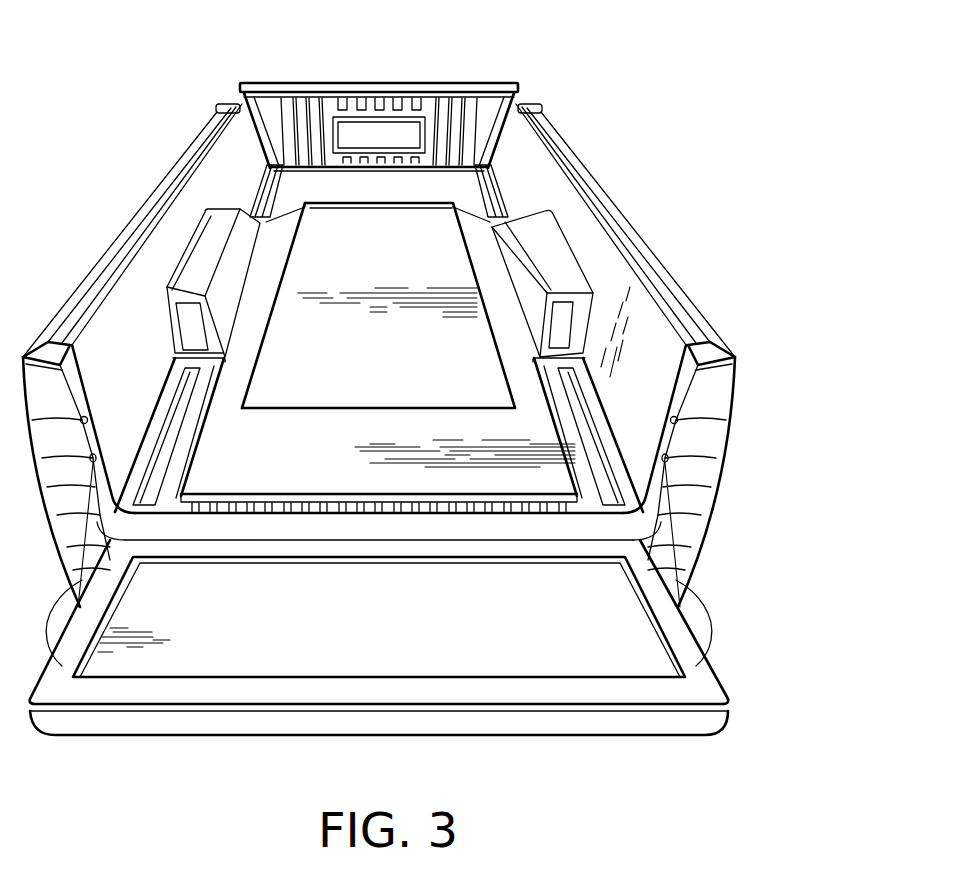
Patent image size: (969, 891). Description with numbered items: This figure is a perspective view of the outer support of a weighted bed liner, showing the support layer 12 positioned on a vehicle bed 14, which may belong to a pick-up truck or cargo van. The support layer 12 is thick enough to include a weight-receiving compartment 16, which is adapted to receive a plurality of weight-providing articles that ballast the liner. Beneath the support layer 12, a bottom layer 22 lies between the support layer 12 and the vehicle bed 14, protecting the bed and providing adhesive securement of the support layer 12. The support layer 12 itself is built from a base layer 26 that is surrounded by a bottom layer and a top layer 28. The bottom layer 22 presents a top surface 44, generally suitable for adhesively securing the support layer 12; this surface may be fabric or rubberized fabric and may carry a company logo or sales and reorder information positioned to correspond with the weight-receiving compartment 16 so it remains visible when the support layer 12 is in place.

The support layer 12 is at (510, 375).
The vehicle bed 14 is at (485, 122).
The weight-receiving compartment 16 is at (298, 282).
The bottom layer 22 is at (430, 272).
The base layer 26 is at (338, 205).
The top layer 28 is at (473, 233).
The top surface 44 is at (412, 222).